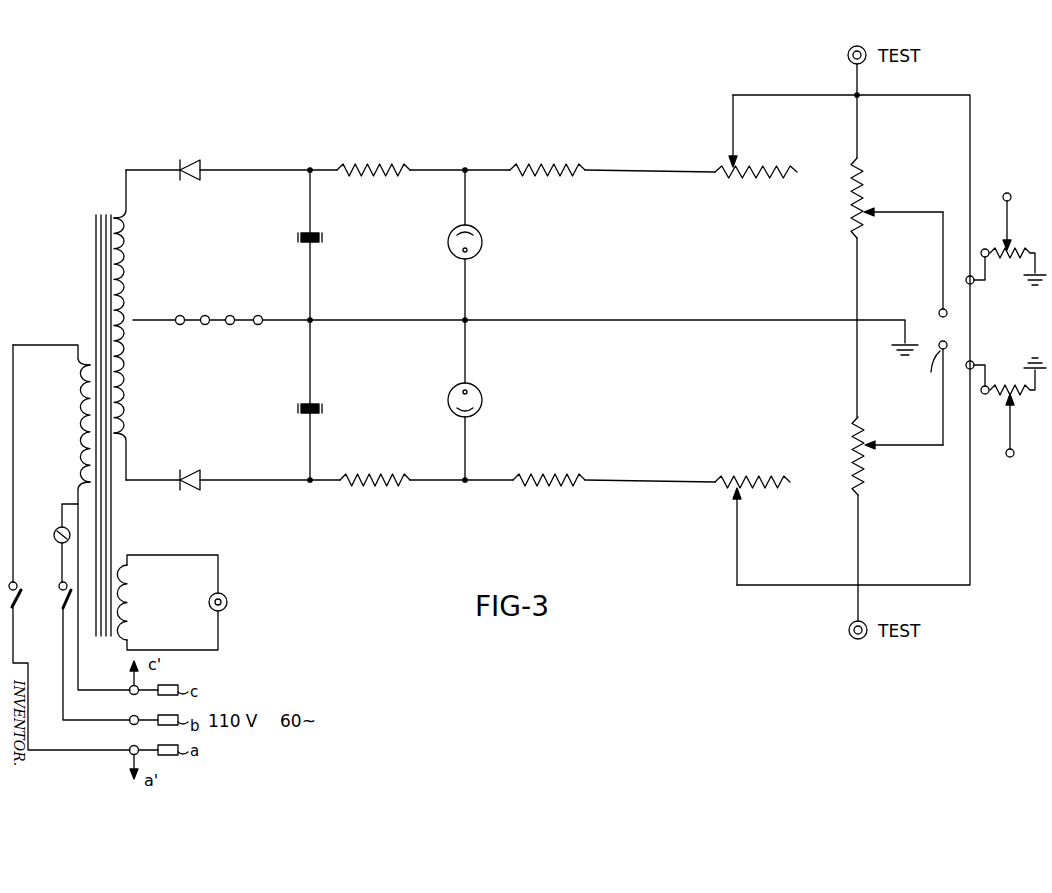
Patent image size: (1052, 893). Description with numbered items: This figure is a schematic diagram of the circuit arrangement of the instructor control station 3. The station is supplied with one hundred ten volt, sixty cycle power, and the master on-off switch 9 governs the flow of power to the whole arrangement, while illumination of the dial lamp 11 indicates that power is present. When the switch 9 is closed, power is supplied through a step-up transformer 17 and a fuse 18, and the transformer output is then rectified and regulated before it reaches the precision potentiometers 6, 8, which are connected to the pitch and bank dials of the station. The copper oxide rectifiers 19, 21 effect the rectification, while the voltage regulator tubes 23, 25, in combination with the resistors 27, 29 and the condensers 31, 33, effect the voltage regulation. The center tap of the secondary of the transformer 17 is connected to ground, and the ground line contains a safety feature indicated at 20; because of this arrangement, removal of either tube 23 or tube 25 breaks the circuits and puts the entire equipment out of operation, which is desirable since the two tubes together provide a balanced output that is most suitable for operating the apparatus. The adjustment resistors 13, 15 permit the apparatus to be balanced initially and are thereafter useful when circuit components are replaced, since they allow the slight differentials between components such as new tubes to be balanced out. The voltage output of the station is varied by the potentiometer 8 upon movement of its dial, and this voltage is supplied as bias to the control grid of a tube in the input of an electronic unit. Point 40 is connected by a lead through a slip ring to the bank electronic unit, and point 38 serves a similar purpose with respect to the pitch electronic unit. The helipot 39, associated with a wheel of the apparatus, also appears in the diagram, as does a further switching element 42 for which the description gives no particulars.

The instructor control station 3 is at (505, 161).
The precision potentiometer 6 is at (850, 210).
The precision potentiometer 8 is at (852, 427).
The master on-off switch 9 is at (43, 603).
The dial lamp 11 is at (228, 602).
The adjustment resistor 13 is at (771, 173).
The adjustment resistor 15 is at (752, 519).
The step-up transformer 17 is at (72, 331).
The fuse 18 is at (54, 539).
The copper oxide rectifier 19 is at (204, 168).
The safety feature 20 is at (203, 308).
The copper oxide rectifier 21 is at (205, 478).
The voltage regulator tube 23 is at (482, 240).
The voltage regulator tube 25 is at (480, 392).
The resistor 27 is at (394, 166).
The resistor 29 is at (400, 484).
The condenser 31 is at (322, 237).
The condenser 33 is at (312, 403).
The point 38 is at (938, 313).
The helipot 39 is at (1016, 386).
The point 40 is at (929, 368).
The switch 42 is at (971, 360).